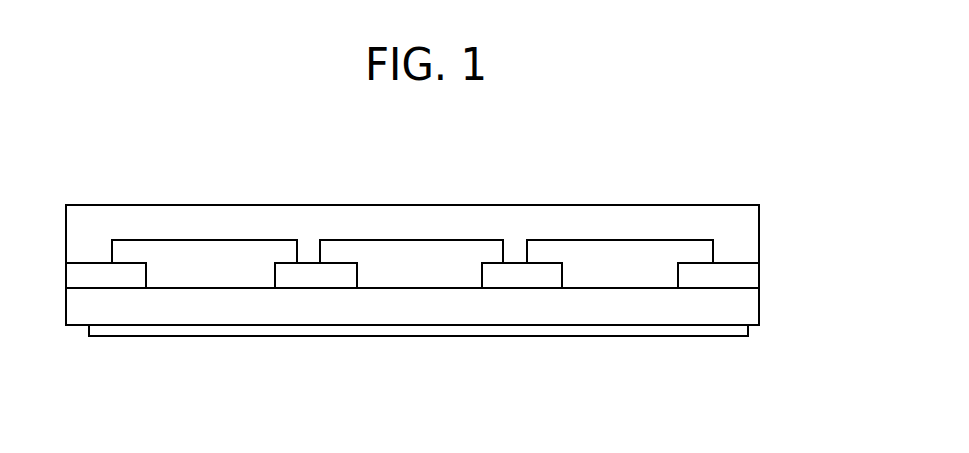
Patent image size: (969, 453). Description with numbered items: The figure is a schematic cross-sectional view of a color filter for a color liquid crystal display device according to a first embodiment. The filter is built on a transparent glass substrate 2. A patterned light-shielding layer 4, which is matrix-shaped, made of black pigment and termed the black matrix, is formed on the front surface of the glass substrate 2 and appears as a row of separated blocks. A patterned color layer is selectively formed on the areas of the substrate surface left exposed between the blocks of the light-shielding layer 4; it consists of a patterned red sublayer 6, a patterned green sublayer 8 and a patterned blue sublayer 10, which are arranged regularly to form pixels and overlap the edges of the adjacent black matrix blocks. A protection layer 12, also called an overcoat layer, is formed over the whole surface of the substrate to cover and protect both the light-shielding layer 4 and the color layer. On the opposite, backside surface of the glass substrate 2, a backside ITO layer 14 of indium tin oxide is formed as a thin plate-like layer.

The transparent glass substrate 2 is at (748, 312).
The light-shielding layer 4 is at (540, 277).
The red sublayer 6 is at (252, 253).
The green sublayer 8 is at (430, 253).
The blue sublayer 10 is at (662, 253).
The protection layer 12 is at (540, 225).
The backside ITO layer 14 is at (455, 330).